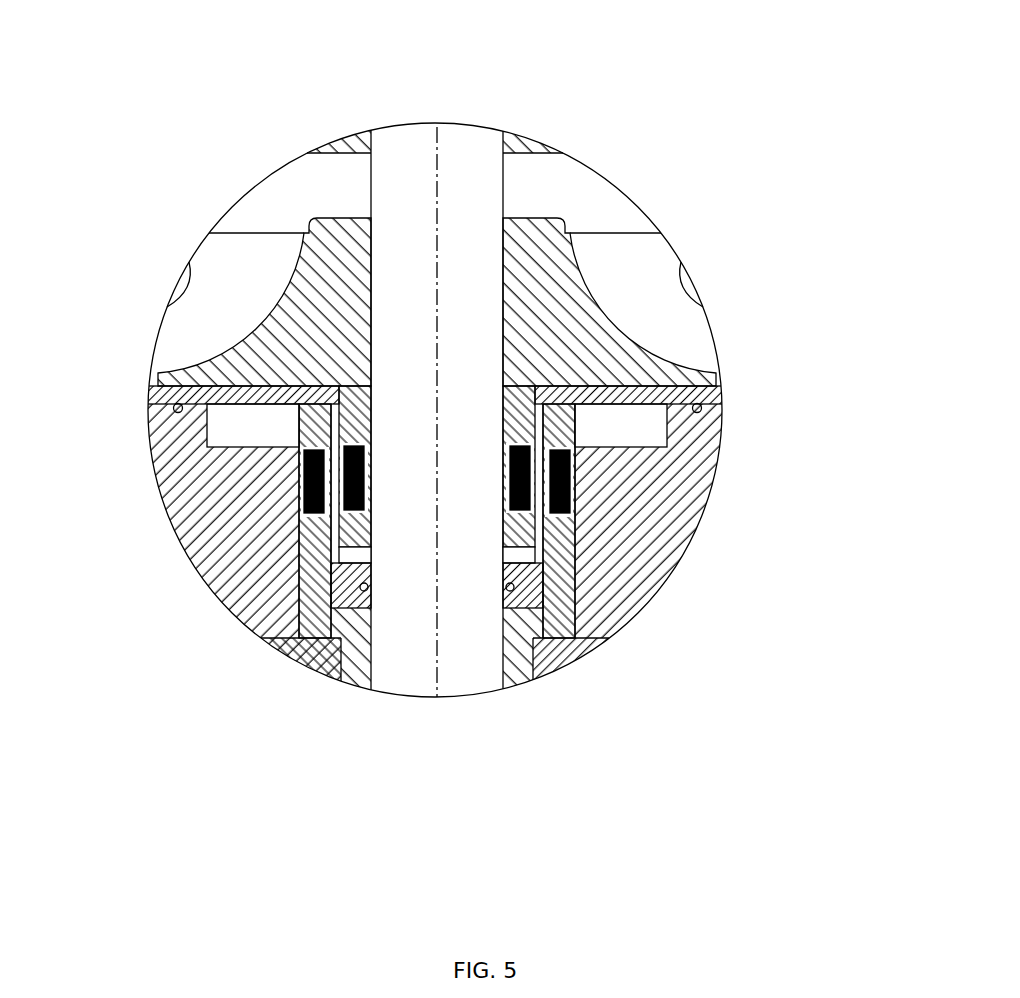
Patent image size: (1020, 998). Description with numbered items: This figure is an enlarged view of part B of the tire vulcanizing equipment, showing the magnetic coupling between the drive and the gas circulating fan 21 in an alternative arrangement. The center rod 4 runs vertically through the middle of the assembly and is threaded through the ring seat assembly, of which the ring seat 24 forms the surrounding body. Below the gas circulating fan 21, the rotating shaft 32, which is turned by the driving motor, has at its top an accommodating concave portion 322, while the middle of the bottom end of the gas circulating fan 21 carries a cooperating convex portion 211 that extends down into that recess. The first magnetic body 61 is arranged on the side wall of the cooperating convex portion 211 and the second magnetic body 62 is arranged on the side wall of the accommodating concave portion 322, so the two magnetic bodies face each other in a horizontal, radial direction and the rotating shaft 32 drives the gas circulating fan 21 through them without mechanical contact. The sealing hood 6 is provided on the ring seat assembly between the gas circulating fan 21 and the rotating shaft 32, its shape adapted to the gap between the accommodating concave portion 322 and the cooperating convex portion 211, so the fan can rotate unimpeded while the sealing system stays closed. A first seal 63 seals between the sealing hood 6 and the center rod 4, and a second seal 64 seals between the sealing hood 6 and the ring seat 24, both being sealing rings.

The center rod 4 is at (452, 148).
The gas circulating fan 21 is at (543, 273).
The cooperating convex portion 211 is at (512, 410).
The sealing hood 6 is at (683, 398).
The first magnetic body 61 is at (578, 452).
The second magnetic body 62 is at (578, 497).
The accommodating concave portion 322 is at (585, 528).
The ring seat 24 is at (650, 557).
The rotating shaft 32 is at (578, 645).
The first seal 63 is at (300, 655).
The second seal 64 is at (176, 410).
The part B is at (447, 697).